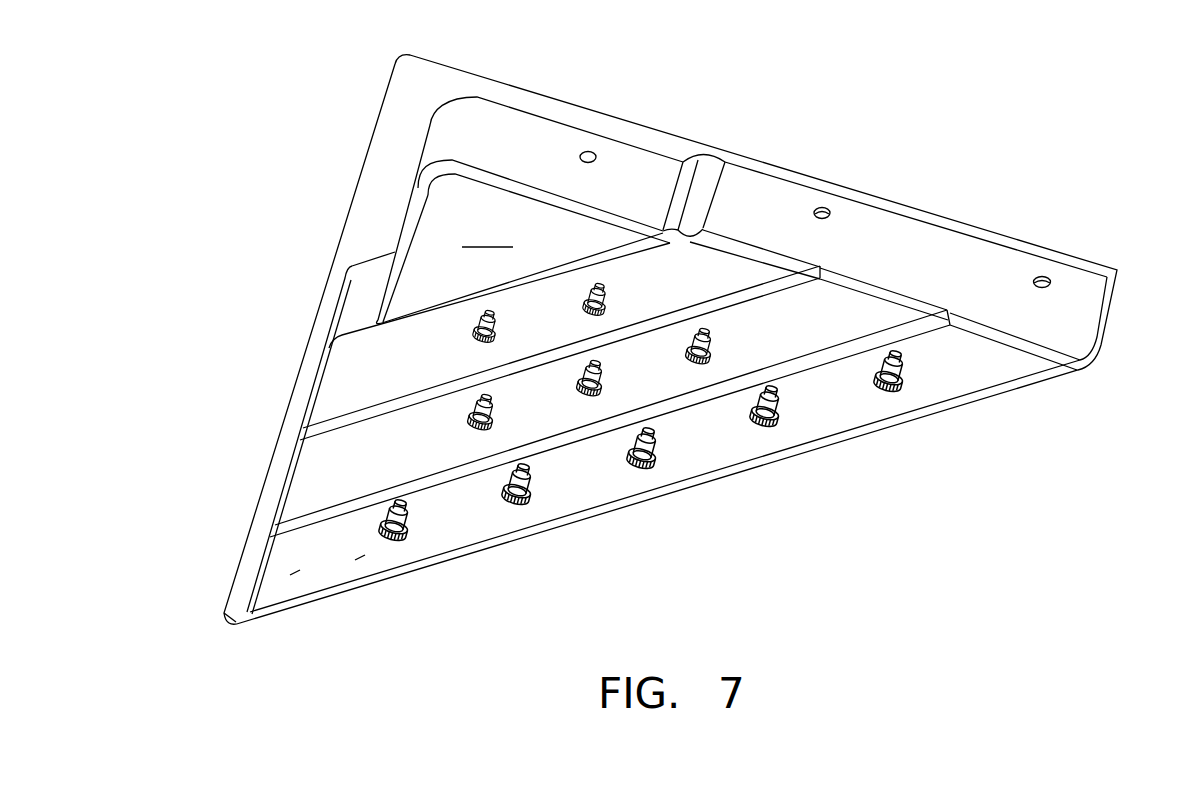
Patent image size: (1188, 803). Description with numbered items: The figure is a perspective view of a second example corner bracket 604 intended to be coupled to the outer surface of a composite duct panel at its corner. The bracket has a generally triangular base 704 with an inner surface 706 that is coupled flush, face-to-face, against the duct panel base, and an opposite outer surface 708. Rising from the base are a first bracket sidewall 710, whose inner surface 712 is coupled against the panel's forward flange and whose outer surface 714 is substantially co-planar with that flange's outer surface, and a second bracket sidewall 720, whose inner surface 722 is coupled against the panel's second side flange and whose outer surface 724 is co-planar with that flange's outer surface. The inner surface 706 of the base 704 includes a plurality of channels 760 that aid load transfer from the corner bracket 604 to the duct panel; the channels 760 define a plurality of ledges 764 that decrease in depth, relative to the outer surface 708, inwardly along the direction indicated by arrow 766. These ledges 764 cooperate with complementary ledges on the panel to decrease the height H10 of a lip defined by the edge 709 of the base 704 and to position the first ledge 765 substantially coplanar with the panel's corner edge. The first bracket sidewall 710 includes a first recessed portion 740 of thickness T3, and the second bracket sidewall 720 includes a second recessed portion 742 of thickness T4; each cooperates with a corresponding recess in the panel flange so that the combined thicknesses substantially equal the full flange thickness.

The corner bracket 604 is at (808, 130).
The base 704 is at (499, 254).
The inner surface 706 is at (297, 566).
The outer surface 708 is at (362, 552).
The edge 709 is at (518, 538).
The first bracket sidewall 710 is at (1063, 311).
The inner surface 712 is at (537, 150).
The outer surface 714 is at (650, 112).
The second bracket sidewall 720 is at (248, 565).
The inner surface 722 is at (355, 302).
The outer surface 724 is at (355, 182).
The first recessed portion 740 is at (1043, 252).
The second recessed portion 742 is at (320, 383).
The channels 760 is at (803, 373).
The ledges 764 is at (528, 320).
The first ledge 765 is at (567, 226).
The arrow 766 is at (717, 487).
The thickness T3 is at (940, 242).
The thickness T4 is at (324, 482).
The height H10 is at (982, 338).